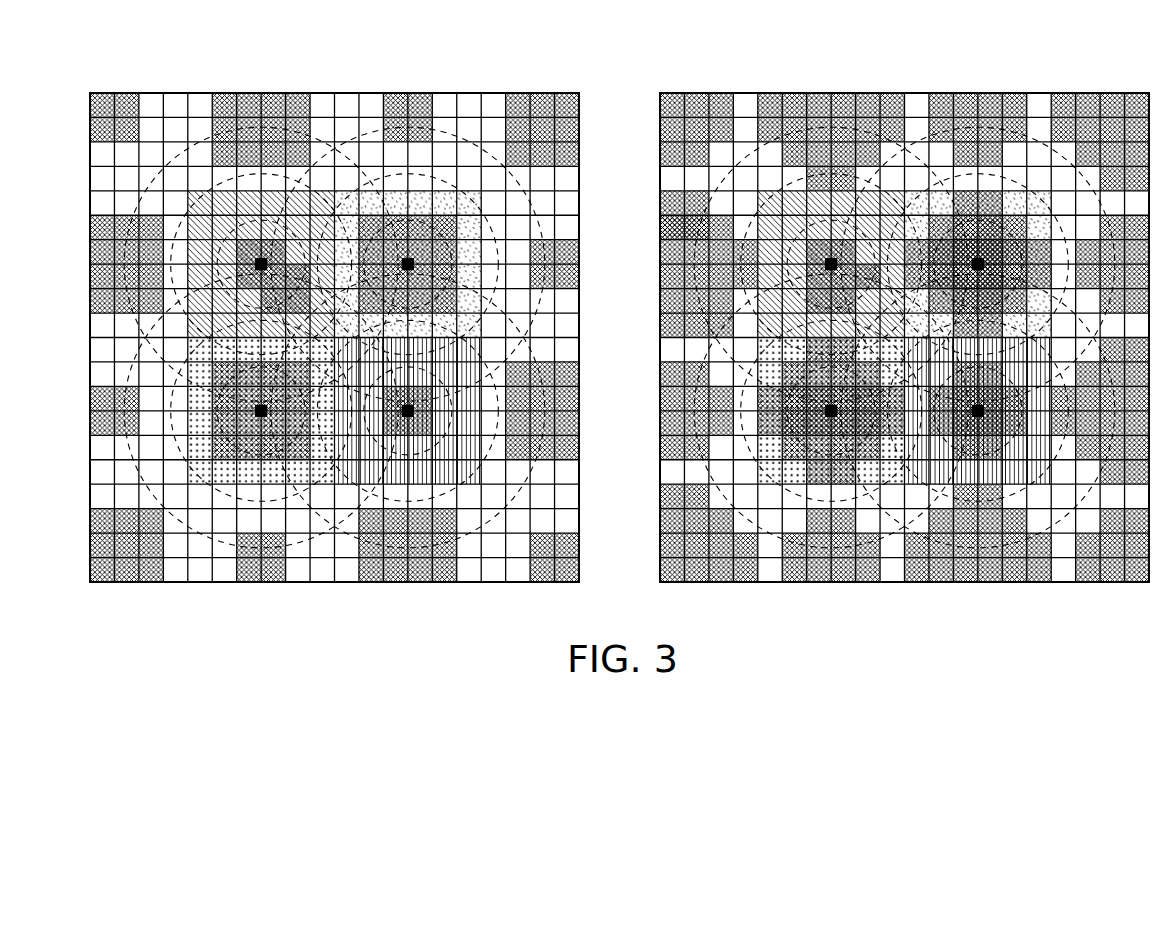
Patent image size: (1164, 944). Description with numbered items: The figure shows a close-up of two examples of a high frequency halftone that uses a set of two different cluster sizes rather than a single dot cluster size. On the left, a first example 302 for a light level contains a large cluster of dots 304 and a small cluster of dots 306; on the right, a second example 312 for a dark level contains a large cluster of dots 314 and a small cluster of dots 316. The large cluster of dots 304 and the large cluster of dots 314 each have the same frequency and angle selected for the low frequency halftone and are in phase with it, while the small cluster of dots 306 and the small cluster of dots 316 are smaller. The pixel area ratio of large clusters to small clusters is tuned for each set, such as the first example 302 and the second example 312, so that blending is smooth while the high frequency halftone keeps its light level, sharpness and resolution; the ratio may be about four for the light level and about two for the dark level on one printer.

The first example 302 is at (439, 80).
The large cluster of dots 304 is at (200, 380).
The small cluster of dots 306 is at (445, 422).
The second example 312 is at (999, 80).
The large cluster of dots 314 is at (1040, 215).
The small cluster of dots 316 is at (790, 232).